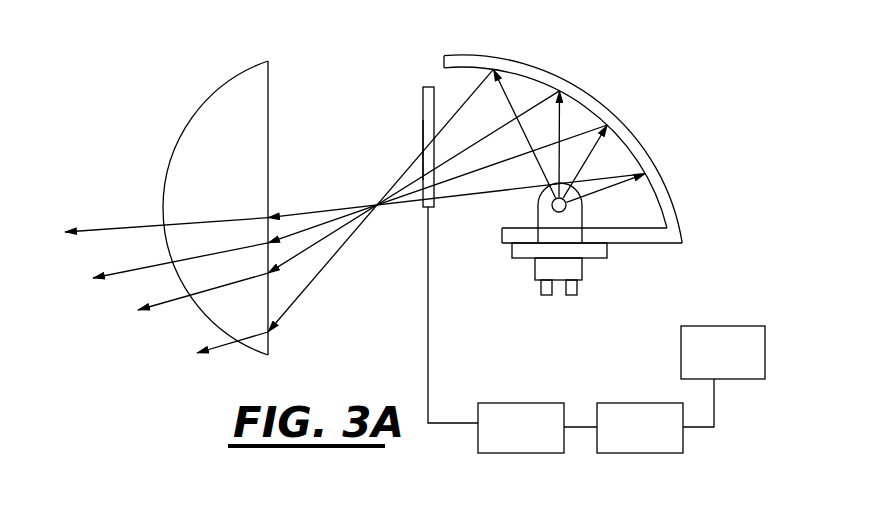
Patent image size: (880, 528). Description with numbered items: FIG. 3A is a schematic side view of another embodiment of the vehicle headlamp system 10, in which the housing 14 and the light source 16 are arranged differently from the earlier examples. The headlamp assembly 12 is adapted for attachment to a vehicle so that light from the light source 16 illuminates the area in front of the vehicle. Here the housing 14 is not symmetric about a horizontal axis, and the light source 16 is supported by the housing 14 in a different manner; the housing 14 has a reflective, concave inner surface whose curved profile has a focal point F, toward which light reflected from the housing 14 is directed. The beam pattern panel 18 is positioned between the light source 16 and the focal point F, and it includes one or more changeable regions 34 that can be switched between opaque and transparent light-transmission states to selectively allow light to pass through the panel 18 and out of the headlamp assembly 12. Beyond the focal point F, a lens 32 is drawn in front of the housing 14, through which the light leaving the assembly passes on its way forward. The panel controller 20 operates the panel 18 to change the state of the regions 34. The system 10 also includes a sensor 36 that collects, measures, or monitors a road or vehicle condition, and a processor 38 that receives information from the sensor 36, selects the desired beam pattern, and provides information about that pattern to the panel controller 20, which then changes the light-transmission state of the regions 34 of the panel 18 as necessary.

The vehicle headlamp system 10 is at (694, 93).
The vehicle headlamp assembly 12 is at (410, 62).
The housing 14 is at (604, 104).
The light source 16 is at (537, 206).
The beam pattern panel 18 is at (423, 93).
The panel controller 20 is at (527, 402).
The lens 32 is at (232, 103).
The changeable region 34 is at (423, 140).
The sensor 36 is at (725, 326).
The processor 38 is at (632, 402).
The focal point F is at (376, 206).